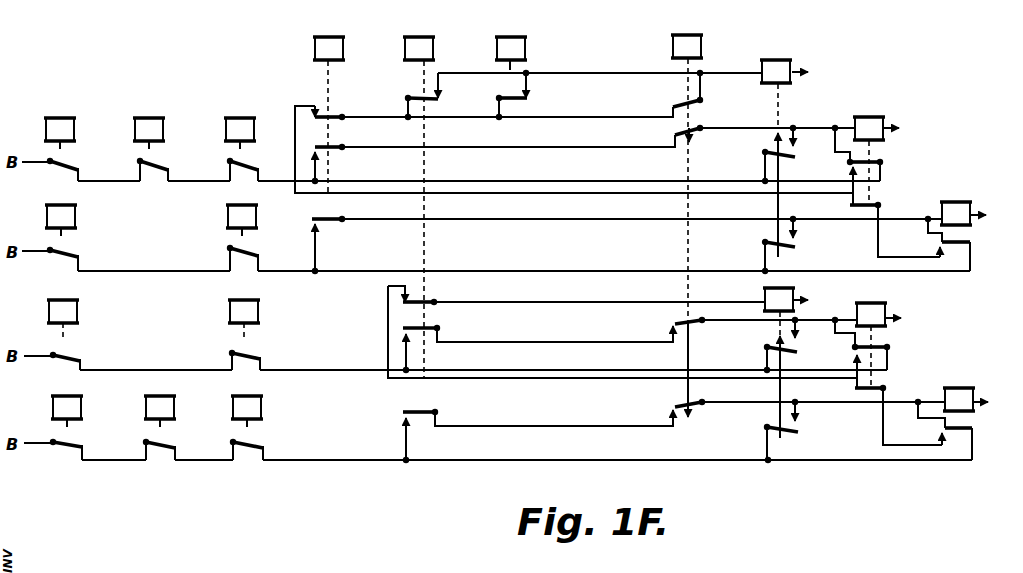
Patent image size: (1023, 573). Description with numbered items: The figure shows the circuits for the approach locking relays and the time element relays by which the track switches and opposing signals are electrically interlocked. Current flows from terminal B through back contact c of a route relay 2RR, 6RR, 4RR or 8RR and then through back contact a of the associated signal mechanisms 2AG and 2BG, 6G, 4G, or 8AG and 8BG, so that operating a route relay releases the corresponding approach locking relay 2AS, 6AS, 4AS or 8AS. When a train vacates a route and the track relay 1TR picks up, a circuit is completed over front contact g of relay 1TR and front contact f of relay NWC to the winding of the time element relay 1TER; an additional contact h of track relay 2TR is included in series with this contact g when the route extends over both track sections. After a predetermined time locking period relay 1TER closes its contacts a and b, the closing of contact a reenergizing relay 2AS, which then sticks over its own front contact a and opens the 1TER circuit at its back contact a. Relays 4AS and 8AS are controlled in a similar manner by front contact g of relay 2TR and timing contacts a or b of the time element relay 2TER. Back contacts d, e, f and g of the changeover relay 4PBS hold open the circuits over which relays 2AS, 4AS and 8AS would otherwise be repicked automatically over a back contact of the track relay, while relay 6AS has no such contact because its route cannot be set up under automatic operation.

The route relay 2RR is at (50, 139).
The signal mechanism 2AG is at (150, 139).
The signal mechanism 2BG is at (241, 139).
The route relay 6RR is at (50, 227).
The signal mechanism 6G is at (242, 227).
The route relay 4RR is at (52, 324).
The signal mechanism 4G is at (244, 324).
The route relay 8RR is at (53, 417).
The signal mechanism 8AG is at (159, 417).
The signal mechanism 8BG is at (246, 417).
The track relay 1TR is at (618, 144).
The track relay 2TR is at (622, 238).
The normal switch indication relay NWC is at (510, 67).
The changeover relay 4PBS is at (755, 216).
The time element relay 1TER is at (788, 155).
The approach locking relay 2AS is at (887, 176).
The approach locking relay 6AS is at (965, 226).
The time element relay 2TER is at (810, 364).
The approach locking relay 4AS is at (888, 363).
The approach locking relay 8AS is at (961, 413).